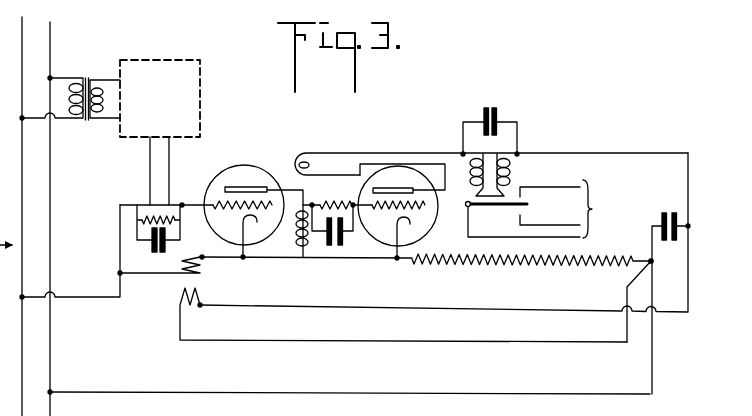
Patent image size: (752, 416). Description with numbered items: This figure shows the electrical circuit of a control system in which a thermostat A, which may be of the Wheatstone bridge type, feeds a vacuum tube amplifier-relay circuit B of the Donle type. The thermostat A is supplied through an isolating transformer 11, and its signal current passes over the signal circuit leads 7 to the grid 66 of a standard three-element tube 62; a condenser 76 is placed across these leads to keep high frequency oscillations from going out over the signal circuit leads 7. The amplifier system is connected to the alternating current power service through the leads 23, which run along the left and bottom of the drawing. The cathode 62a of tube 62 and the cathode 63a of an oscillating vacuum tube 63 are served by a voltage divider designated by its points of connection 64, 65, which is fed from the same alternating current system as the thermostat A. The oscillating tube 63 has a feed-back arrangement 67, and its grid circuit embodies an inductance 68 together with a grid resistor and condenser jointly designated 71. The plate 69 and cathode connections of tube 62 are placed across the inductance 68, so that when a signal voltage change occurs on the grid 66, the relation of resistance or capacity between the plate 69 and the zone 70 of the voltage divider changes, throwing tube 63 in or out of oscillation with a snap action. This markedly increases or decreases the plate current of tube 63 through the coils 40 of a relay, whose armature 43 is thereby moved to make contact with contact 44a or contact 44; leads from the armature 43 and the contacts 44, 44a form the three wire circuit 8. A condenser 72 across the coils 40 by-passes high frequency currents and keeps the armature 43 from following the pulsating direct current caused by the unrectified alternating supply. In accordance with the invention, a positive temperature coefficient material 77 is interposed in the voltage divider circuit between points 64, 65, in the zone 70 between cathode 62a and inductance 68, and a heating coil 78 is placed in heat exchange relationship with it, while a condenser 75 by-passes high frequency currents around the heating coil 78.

The isolating transformer 11 is at (92, 76).
The thermostat A is at (200, 118).
The signal circuit leads 7 is at (168, 160).
The leads 23 is at (70, 296).
The point of connection of voltage divider 64 is at (122, 276).
The condenser 76 is at (151, 245).
The positive temperature coefficient material 77 is at (204, 265).
The heating coil 78 is at (202, 295).
The zone of the voltage divider 70 is at (266, 259).
The three-element tube 62 is at (242, 199).
The plate 69 is at (250, 186).
The grid 66 is at (215, 198).
The cathode 62a is at (240, 222).
The inductance 68 is at (296, 230).
The grid resistor and condenser 71 is at (356, 240).
The feed-back arrangement 67 is at (330, 153).
The amplifier-relay circuit B is at (410, 148).
The oscillating vacuum tube 63 is at (406, 224).
The cathode 63a is at (394, 232).
The condenser 72 is at (497, 116).
The relay coils 40 is at (510, 178).
The three wire circuit 8 is at (536, 209).
The armature 43 is at (485, 207).
The contact 44a is at (522, 197).
The contact 44 is at (522, 216).
The condenser 75 is at (664, 213).
The point of connection of voltage divider 65 is at (653, 264).